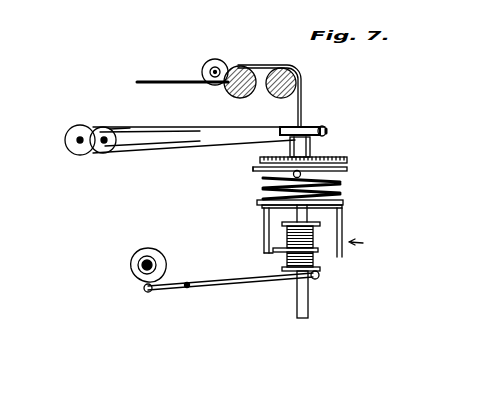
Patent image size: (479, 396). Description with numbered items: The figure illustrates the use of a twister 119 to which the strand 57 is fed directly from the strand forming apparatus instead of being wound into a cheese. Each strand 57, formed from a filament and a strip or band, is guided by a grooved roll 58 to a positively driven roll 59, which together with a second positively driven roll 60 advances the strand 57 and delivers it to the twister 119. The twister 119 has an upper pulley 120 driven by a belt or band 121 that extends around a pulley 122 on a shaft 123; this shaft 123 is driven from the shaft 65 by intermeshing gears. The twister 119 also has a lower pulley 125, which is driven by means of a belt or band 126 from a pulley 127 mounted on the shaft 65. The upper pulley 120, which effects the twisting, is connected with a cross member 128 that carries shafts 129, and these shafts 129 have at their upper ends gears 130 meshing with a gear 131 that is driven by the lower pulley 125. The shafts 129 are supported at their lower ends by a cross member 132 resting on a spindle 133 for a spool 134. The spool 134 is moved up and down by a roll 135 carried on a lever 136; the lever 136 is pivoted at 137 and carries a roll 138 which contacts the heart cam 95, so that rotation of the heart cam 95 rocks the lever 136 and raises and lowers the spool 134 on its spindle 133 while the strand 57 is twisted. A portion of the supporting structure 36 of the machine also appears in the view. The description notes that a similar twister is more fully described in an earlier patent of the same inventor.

The frame 36 is at (0, 226).
The strand 57 is at (181, 80).
The grooved roll 58 is at (215, 59).
The positively driven roll 59 is at (245, 67).
The second positively driven roll 60 is at (282, 68).
The shaft 65 is at (104, 144).
The heart cam 95 is at (150, 248).
The twister 119 is at (369, 247).
The upper pulley 120 is at (306, 127).
The belt or band 121 is at (241, 127).
The pulley 122 is at (72, 131).
The shaft 123 is at (79, 144).
The lower pulley 125 is at (327, 134).
The belt or band 126 is at (324, 138).
The pulley 127 is at (113, 129).
The cross member 128 is at (257, 171).
The shafts 129 is at (347, 169).
The gears 130 is at (347, 158).
The gear 131 is at (288, 156).
The cross member 132 is at (345, 202).
The spindle 133 is at (309, 297).
The spool 134 is at (321, 224).
The roll 135 is at (320, 276).
The lever 136 is at (221, 286).
The pivot 137 is at (188, 283).
The roll 138 is at (148, 292).